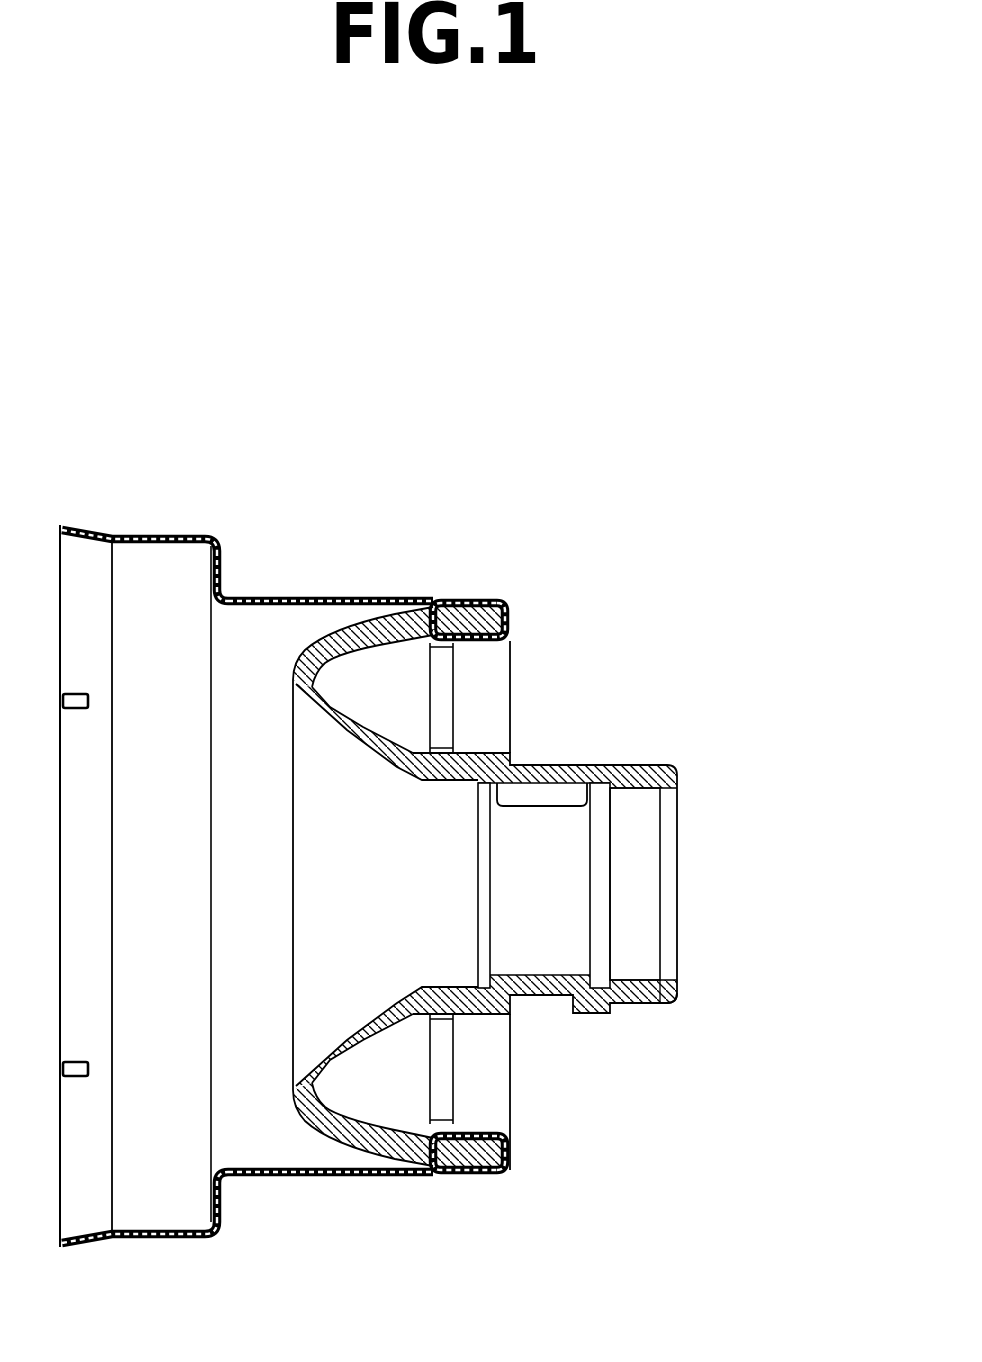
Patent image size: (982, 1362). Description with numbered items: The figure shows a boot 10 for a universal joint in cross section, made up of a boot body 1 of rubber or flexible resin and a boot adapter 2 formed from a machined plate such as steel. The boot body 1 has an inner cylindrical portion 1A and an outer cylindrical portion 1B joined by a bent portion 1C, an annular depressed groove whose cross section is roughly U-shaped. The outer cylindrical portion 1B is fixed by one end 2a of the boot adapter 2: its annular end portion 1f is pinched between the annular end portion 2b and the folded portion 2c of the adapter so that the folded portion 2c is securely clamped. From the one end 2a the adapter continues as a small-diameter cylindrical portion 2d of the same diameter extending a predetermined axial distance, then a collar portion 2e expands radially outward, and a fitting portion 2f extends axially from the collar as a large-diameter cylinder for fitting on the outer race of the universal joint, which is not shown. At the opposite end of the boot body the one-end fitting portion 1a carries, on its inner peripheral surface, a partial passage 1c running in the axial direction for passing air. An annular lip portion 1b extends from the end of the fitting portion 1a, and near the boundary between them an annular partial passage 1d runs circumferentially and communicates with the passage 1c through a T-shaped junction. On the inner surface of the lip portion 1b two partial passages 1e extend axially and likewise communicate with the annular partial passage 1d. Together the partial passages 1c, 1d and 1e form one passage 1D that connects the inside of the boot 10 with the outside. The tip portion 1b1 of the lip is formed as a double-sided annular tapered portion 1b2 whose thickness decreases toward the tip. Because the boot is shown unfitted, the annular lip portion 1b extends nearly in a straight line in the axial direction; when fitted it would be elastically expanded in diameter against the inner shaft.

The boot for a universal joint 10 is at (470, 445).
The boot body 1 is at (492, 748).
The inner cylindrical portion 1A is at (566, 762).
The outer cylindrical portion 1B is at (488, 600).
The bent portion 1C is at (378, 725).
The passage 1D is at (628, 768).
The one-end fitting portion 1a is at (545, 995).
The annular lip portion 1b is at (640, 1013).
The tip portion 1b1 is at (667, 1003).
The double-sided annular tapered portion 1b2 is at (675, 983).
The partial passage 1c is at (542, 806).
The annular partial passage 1d is at (600, 863).
The partial passages 1e is at (635, 975).
The annular end portion 1f is at (455, 597).
The boot adapter 2 is at (308, 570).
The one end of the boot adapter 2a is at (512, 603).
The annular end portion 2b is at (512, 622).
The folded portion 2c is at (480, 652).
The small-diameter cylindrical portion 2d is at (350, 600).
The collar portion 2e is at (228, 565).
The fitting portion 2f is at (160, 537).